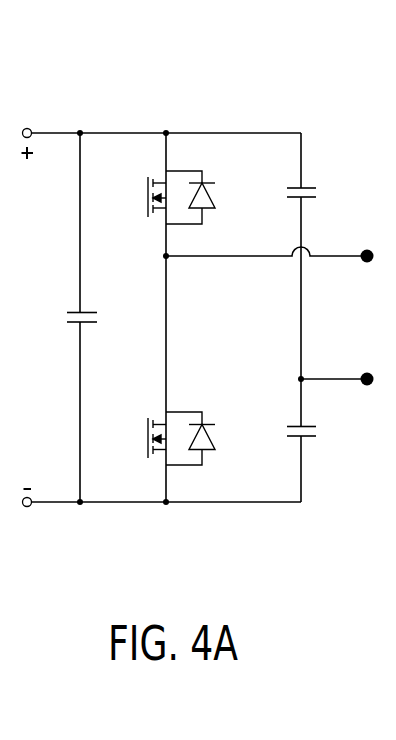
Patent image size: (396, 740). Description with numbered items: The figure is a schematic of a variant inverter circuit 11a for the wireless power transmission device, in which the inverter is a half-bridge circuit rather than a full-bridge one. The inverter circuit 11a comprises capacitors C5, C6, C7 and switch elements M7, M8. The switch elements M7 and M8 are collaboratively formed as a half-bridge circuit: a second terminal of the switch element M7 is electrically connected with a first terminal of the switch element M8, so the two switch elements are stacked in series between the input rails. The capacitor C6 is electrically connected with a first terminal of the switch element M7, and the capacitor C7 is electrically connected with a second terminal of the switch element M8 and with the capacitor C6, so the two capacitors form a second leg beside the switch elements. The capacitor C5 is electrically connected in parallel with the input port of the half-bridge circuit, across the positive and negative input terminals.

The inverter circuit 11a is at (198, 264).
The switch element M7 is at (142, 208).
The switch element M8 is at (142, 450).
The capacitor C5 is at (72, 296).
The capacitor C6 is at (283, 189).
The capacitor C7 is at (282, 430).